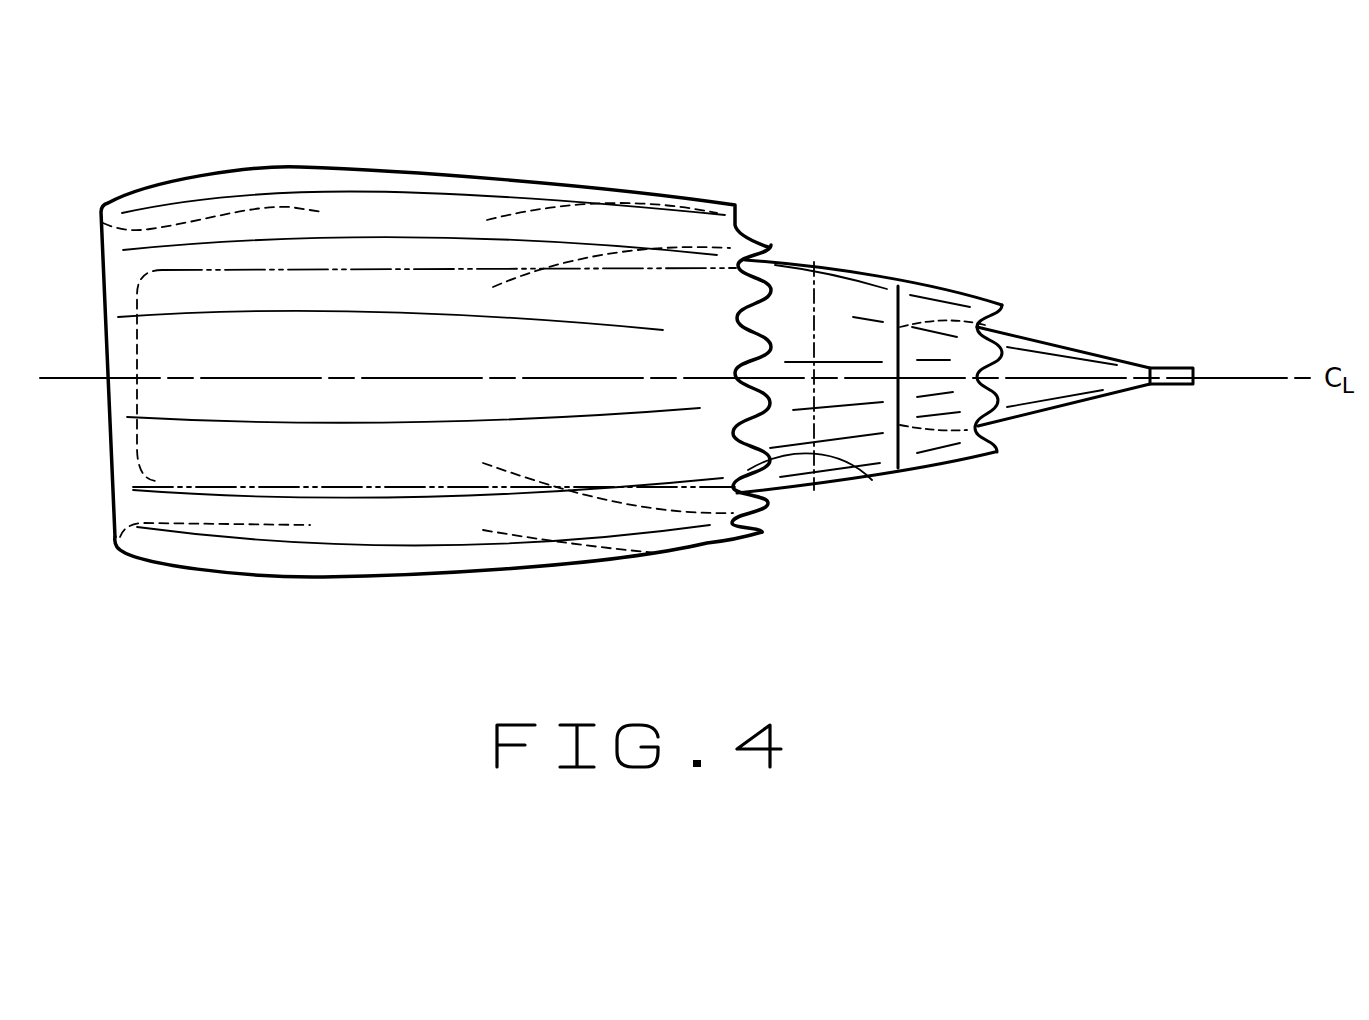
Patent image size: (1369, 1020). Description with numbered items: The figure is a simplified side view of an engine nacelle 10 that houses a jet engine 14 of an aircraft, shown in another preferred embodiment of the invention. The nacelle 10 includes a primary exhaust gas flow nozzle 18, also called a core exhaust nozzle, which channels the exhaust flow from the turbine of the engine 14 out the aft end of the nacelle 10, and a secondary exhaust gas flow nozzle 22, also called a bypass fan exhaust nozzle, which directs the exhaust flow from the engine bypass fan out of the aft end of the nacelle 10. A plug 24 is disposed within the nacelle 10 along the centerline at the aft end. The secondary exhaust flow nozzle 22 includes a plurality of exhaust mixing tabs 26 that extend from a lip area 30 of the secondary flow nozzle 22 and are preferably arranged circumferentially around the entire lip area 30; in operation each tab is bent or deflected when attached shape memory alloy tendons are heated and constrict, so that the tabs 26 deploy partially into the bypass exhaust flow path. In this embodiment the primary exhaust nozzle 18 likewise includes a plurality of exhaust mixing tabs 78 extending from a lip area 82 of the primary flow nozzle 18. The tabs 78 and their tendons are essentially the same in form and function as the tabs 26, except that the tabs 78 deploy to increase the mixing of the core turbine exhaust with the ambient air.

The engine nacelle 10 is at (224, 195).
The jet engine 14 is at (337, 268).
The primary exhaust gas flow nozzle 18 is at (880, 467).
The secondary exhaust gas flow nozzle 22 is at (550, 245).
The plug 24 is at (1073, 362).
The exhaust mixing tabs 26 is at (770, 247).
The lip area 30 is at (705, 535).
The exhaust mixing tabs 78 is at (1030, 347).
The lip area 82 is at (960, 302).